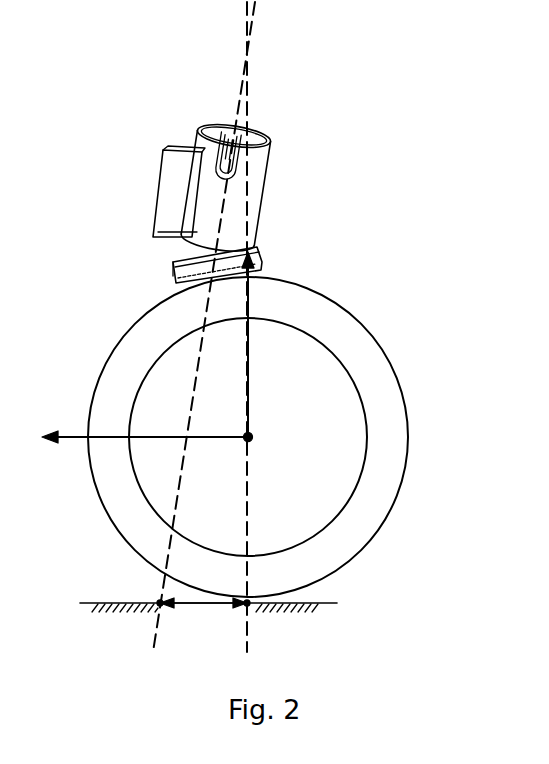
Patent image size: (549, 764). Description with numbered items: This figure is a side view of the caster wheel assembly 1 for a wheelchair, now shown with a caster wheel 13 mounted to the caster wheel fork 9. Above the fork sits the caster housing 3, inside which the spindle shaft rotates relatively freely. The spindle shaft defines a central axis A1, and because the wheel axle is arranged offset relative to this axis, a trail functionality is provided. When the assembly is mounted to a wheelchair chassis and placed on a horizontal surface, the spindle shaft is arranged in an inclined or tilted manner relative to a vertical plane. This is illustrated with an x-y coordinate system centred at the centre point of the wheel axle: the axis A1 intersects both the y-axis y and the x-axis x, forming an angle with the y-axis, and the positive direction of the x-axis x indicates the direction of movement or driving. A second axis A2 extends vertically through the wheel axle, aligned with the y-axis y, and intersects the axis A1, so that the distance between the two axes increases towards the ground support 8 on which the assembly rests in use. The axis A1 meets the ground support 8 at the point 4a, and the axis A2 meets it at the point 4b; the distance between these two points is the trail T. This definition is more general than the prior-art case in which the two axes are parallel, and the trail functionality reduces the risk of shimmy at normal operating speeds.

The caster wheel assembly 1 is at (426, 287).
The caster housing 3 is at (210, 153).
The caster wheel fork 9 is at (177, 285).
The caster wheel 13 is at (408, 403).
The ground support 8 is at (314, 606).
The point where axis A1 intersects the ground support 4a is at (158, 606).
The point where axis A2 intersects the ground support 4b is at (249, 605).
The central axis of the spindle shaft A1 is at (238, 114).
The vertical axis through the wheel axle A2 is at (247, 552).
The trail T is at (203, 614).
The x-axis x is at (147, 453).
The y-axis y is at (259, 344).